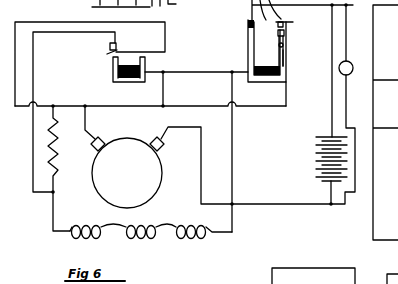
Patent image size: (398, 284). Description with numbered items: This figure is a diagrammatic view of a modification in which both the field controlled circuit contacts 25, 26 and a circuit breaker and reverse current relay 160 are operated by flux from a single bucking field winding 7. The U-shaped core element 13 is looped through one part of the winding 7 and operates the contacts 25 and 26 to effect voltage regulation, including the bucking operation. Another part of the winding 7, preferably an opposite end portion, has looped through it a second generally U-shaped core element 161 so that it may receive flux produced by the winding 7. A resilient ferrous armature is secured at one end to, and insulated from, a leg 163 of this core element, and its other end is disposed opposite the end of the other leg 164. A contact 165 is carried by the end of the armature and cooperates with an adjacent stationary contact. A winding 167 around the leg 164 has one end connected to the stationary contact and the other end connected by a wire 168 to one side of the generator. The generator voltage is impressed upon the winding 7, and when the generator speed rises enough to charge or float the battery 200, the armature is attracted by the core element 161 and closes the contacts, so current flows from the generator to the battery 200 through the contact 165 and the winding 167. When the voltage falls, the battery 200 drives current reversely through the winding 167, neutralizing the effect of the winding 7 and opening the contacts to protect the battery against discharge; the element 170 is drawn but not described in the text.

The bucking field winding 7 is at (193, 66).
The U-shaped core element 13 is at (133, 90).
The field controlled circuit contact 25 is at (110, 52).
The field controlled circuit contact 26 is at (110, 46).
The circuit breaker and reverse current relay 160 is at (288, 33).
The U-shaped core element 161 is at (249, 56).
The leg 163 is at (253, 48).
The leg 164 is at (287, 46).
The contact 165 is at (286, 22).
The winding 167 is at (290, 54).
The wire 168 is at (278, 108).
The lamp 170 is at (348, 62).
The battery 200 is at (316, 162).